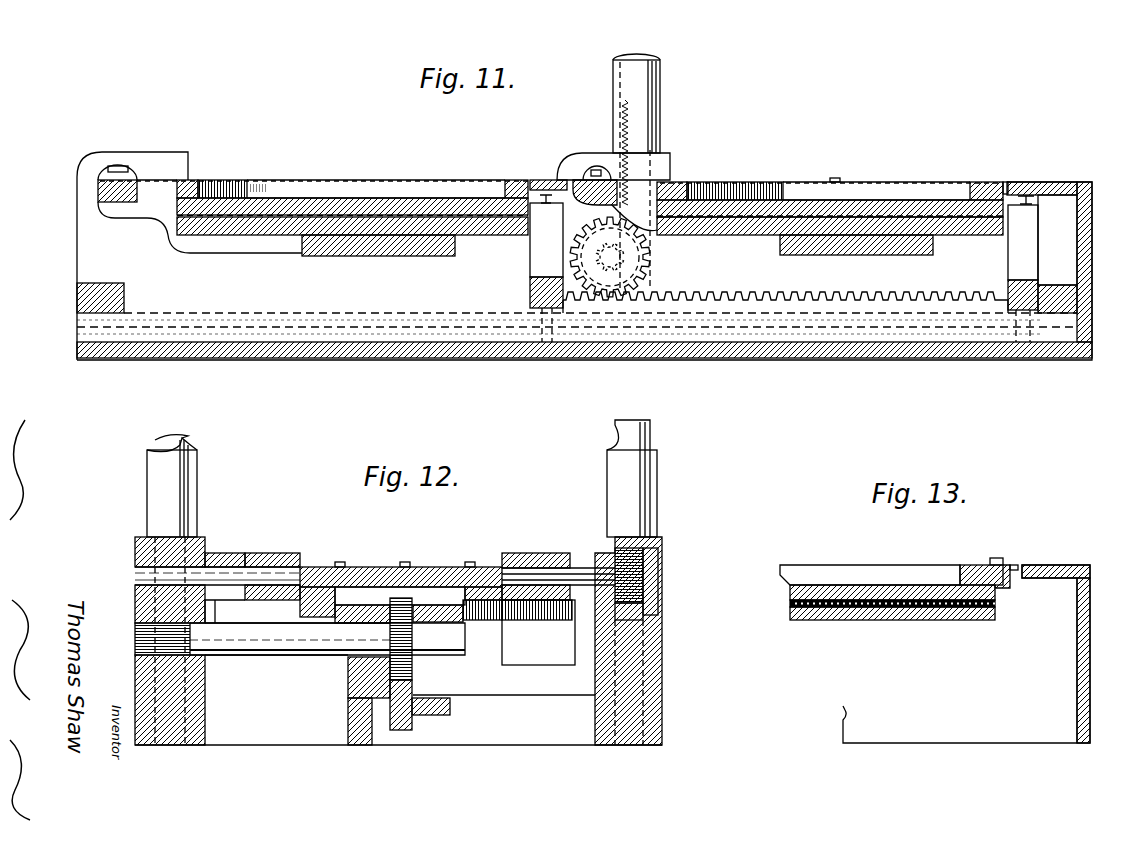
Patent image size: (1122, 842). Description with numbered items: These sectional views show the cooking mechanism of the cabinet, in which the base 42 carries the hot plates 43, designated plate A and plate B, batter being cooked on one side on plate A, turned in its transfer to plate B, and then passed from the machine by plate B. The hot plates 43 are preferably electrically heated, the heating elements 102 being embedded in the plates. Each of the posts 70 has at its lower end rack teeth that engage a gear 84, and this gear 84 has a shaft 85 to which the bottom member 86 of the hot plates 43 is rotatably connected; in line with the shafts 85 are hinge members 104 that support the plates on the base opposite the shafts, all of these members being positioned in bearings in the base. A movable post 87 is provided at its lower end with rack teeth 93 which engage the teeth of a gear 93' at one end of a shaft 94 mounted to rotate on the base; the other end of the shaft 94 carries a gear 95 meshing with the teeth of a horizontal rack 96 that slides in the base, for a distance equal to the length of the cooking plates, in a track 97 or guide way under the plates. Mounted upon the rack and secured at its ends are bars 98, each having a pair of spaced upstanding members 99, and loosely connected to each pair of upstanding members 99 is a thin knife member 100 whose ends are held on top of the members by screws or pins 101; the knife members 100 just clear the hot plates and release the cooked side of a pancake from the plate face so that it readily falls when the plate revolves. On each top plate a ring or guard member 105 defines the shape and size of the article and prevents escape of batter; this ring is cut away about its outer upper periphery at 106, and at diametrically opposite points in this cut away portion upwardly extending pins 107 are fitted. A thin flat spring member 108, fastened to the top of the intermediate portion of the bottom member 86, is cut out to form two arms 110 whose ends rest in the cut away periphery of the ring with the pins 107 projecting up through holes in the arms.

In FIG. 11, the base 42 is at (842, 357).
In FIG. 12, the base 42 is at (630, 703).
In FIG. 13, the base 42 is at (1077, 660).
In FIG. 11, the hot plates 43 is at (410, 198).
In FIG. 12, the posts 70 is at (190, 447).
In FIG. 12, the gear 84 is at (640, 575).
In FIG. 12, the shaft 85 is at (525, 575).
In FIG. 11, the bottom member 86 is at (350, 240).
In FIG. 11, the movable post 87 is at (637, 63).
In FIG. 11, the rack teeth 93 is at (613, 176).
In FIG. 11, the gear 93' is at (603, 295).
In FIG. 12, the gear 93' is at (144, 644).
In FIG. 12, the shaft 94 is at (270, 640).
In FIG. 11, the gear 95 is at (645, 268).
In FIG. 12, the gear 95 is at (412, 650).
In FIG. 11, the horizontal rack 96 is at (730, 292).
In FIG. 12, the horizontal rack 96 is at (385, 690).
In FIG. 12, the track 97 is at (430, 722).
In FIG. 11, the bars 98 is at (535, 282).
In FIG. 12, the bars 98 is at (548, 676).
In FIG. 11, the upstanding members 99 is at (545, 248).
In FIG. 12, the upstanding members 99 is at (588, 645).
In FIG. 11, the knife member 100 is at (1040, 190).
In FIG. 11, the screws or pins 101 is at (1025, 194).
In FIG. 13, the heating elements 102 is at (842, 605).
In FIG. 12, the hinge members 104 is at (135, 578).
In FIG. 11, the ring or guard member 105 is at (970, 185).
In FIG. 11, the cut away portion 106 is at (1000, 183).
In FIG. 13, the cut away portion 106 is at (978, 563).
In FIG. 11, the pins 107 is at (835, 181).
In FIG. 13, the pins 107 is at (1003, 563).
In FIG. 12, the spring member 108 is at (378, 564).
In FIG. 13, the arms 110 is at (1020, 566).
In FIG. 11, the plate A is at (785, 183).
In FIG. 11, the plate B is at (308, 198).